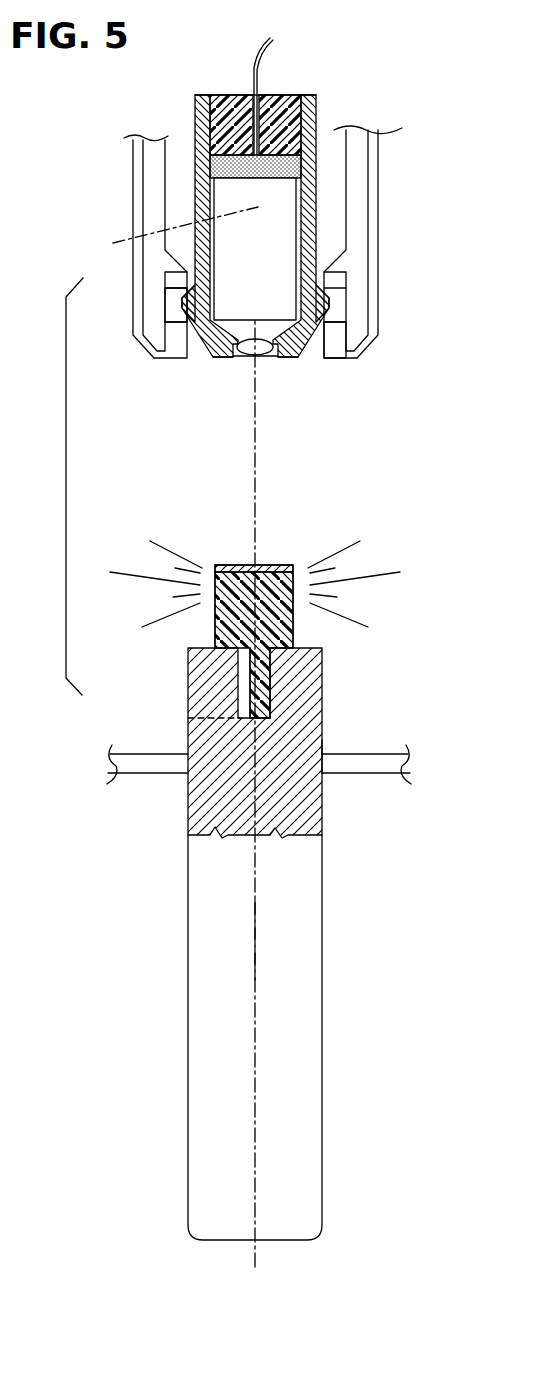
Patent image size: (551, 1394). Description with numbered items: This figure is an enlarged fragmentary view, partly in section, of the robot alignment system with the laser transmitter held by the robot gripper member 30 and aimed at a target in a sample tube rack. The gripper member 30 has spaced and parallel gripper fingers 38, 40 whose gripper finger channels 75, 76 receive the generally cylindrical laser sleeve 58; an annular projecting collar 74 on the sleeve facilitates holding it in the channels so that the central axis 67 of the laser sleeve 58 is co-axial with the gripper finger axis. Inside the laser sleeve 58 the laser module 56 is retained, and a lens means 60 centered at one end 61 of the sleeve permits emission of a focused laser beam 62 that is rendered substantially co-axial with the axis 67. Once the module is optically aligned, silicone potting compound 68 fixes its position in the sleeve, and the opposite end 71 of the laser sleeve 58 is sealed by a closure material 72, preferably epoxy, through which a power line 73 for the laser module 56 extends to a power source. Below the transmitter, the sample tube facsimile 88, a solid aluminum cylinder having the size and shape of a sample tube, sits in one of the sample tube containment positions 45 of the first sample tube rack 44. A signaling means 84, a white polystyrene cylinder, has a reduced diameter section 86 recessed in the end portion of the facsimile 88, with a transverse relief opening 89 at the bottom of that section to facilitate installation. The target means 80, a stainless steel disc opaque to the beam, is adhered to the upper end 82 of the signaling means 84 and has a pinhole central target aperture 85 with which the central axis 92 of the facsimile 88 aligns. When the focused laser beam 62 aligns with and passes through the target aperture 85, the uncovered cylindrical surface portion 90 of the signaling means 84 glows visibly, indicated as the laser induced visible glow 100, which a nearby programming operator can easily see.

The robot gripper member 30 is at (392, 185).
The gripper finger 38 is at (132, 197).
The gripper finger 40 is at (380, 158).
The first sample tube rack 44 is at (163, 768).
The sample tube containment positions 45 is at (323, 752).
The laser module 56 is at (282, 280).
The laser sleeve 58 is at (316, 122).
The lens means 60 is at (263, 351).
The end of the laser sleeve 61 is at (222, 358).
The focused laser beam 62 is at (250, 468).
The central axis of the laser sleeve 67 is at (170, 238).
The silicone potting compound 68 is at (275, 163).
The end of the laser sleeve 71 is at (200, 95).
The closure material 72 is at (282, 96).
The power line 73 is at (264, 39).
The annular projecting collar 74 is at (330, 298).
The gripper finger channel 75 is at (167, 298).
The gripper finger channel 76 is at (340, 320).
The target means 80 is at (292, 568).
The upper end of the signaling means 82 is at (214, 576).
The signaling means 84 is at (294, 620).
The central target aperture 85 is at (262, 565).
The reduced diameter section 86 is at (192, 638).
The sample tube facsimile 88 is at (323, 937).
The transverse relief opening 89 is at (187, 718).
The uncovered cylindrical surface portion 90 is at (300, 646).
The central axis of the sample tube facsimile 92 is at (251, 930).
The laser induced visible glow 100 is at (372, 575).